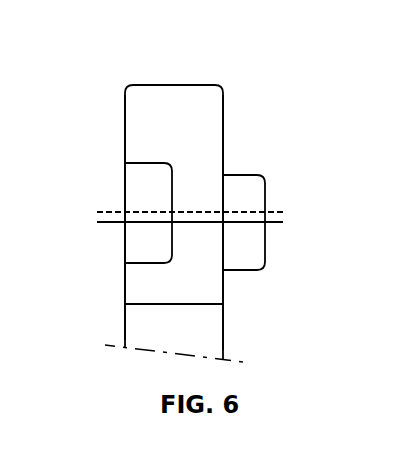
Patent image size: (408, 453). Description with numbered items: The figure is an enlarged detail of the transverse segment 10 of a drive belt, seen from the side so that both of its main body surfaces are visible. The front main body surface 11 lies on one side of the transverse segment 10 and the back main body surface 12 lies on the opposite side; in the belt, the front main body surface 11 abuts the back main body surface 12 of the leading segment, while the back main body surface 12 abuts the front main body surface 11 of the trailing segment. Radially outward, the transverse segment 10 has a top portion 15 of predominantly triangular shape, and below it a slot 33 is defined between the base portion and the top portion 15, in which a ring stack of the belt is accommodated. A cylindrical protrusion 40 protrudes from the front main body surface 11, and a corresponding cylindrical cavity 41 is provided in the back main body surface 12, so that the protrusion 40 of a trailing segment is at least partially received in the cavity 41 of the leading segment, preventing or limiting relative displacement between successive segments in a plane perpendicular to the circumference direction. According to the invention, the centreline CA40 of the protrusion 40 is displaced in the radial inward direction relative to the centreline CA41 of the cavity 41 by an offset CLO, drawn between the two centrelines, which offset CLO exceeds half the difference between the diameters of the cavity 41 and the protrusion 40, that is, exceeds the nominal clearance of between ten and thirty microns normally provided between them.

The transverse segment 10 is at (173, 98).
The front main body surface 11 is at (227, 103).
The back main body surface 12 is at (120, 104).
The top portion 15 is at (174, 210).
The slot 33 is at (174, 341).
The protrusion 40 is at (252, 175).
The cavity 41 is at (125, 160).
The centreline of the protrusion CA40 is at (100, 230).
The centreline of the cavity CA41 is at (99, 204).
The offset CLO is at (274, 203).